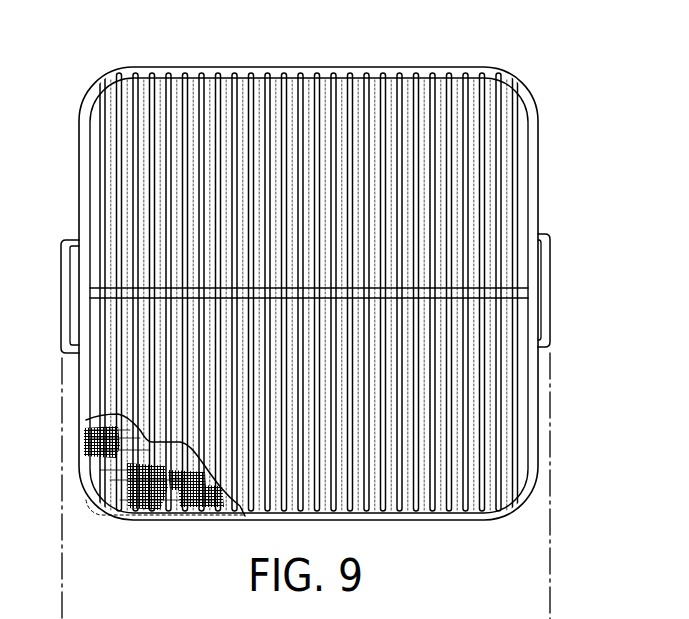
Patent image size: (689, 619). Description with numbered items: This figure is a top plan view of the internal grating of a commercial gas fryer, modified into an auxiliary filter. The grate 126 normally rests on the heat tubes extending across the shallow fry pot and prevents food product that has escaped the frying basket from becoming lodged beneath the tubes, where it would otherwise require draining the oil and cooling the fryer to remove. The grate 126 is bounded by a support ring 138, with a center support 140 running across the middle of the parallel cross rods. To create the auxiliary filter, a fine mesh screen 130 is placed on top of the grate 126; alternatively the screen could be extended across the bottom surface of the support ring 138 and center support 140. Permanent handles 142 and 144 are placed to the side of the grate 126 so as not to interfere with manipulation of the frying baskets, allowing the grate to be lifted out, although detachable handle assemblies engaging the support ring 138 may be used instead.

The grate 126 is at (406, 518).
The fine mesh screen 130 is at (180, 513).
The support ring 138 is at (147, 67).
The center support 140 is at (476, 285).
The permanent handle 142 is at (72, 240).
The permanent handle 144 is at (552, 328).